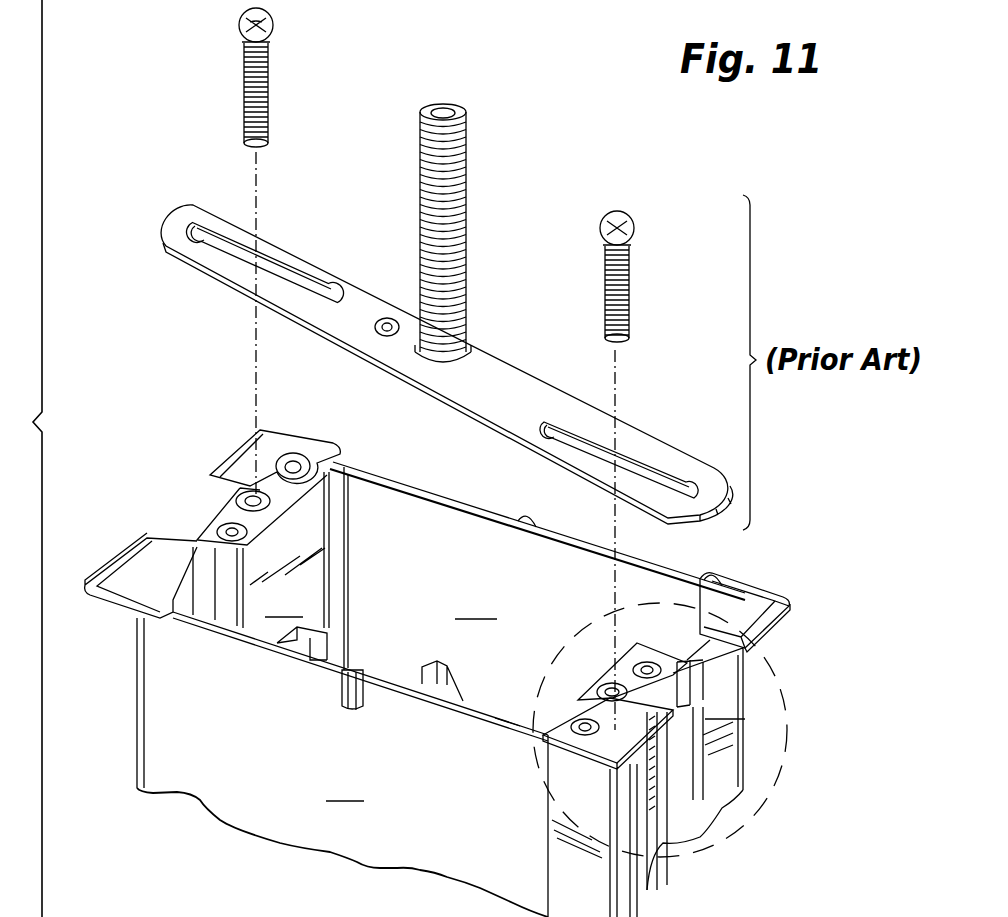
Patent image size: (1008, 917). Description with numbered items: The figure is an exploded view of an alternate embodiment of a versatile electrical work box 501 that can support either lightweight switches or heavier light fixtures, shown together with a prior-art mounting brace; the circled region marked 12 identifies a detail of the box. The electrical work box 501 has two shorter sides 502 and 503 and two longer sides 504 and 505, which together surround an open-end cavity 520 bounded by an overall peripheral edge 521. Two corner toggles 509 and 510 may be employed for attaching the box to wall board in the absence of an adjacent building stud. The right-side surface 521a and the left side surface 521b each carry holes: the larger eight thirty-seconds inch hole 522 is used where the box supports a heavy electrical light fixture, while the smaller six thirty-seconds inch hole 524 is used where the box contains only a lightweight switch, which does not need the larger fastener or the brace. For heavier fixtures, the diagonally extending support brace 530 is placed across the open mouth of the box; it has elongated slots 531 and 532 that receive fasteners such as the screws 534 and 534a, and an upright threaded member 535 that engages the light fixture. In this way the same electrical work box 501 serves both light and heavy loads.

The detail view circle 12 is at (755, 815).
The versatile electrical work box 501 is at (788, 622).
The shorter side 502 is at (260, 603).
The shorter side 503 is at (677, 778).
The longer side 504 is at (369, 767).
The longer side 505 is at (422, 571).
The corner toggle 509 is at (275, 449).
The corner toggle 510 is at (615, 692).
The open-end cavity 520 is at (477, 632).
The overall peripheral edge 521 is at (511, 713).
The right-side surface 521a is at (670, 663).
The left side surface 521b is at (300, 493).
The larger 8/32 inch hole 522 is at (247, 492).
The smaller 6/32 inch hole 524 is at (228, 528).
The diagonally extending support brace 530 is at (447, 340).
The elongated slot 531 is at (219, 238).
The elongated slot 532 is at (641, 476).
The screw 534 is at (631, 273).
The screw 534a is at (269, 84).
The upright threaded member 535 is at (467, 143).